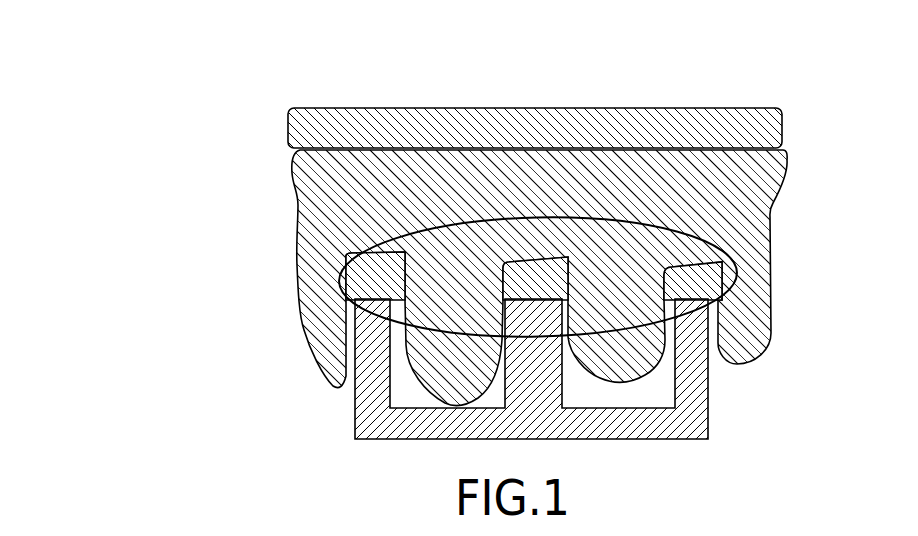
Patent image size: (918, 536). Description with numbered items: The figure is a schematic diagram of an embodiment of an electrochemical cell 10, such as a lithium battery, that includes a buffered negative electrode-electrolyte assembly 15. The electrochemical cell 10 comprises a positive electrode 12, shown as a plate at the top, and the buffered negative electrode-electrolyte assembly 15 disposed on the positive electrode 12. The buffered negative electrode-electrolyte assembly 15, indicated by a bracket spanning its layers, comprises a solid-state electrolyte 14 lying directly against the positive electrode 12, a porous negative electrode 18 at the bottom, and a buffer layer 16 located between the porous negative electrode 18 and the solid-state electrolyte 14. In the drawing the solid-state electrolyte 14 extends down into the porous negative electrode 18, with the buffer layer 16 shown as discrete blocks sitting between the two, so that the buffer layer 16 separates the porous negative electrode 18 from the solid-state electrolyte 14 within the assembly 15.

The electrochemical cell 10 is at (122, 89).
The positive electrode 12 is at (353, 118).
The solid-state electrolyte 14 is at (313, 203).
The buffered negative electrode-electrolyte assembly 15 is at (212, 191).
The buffer layer 16 is at (365, 269).
The porous negative electrode 18 is at (370, 412).